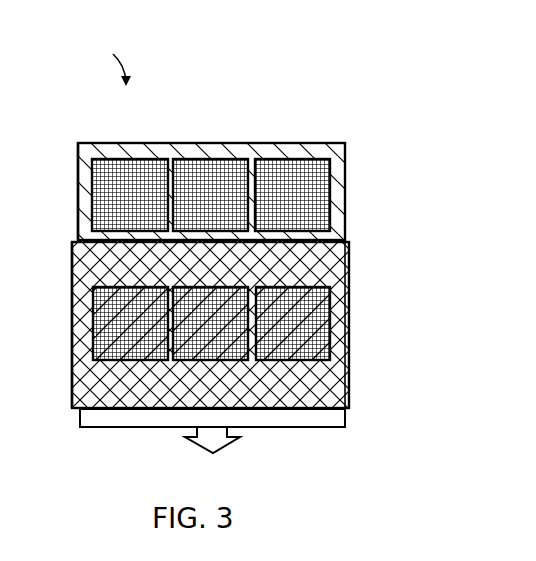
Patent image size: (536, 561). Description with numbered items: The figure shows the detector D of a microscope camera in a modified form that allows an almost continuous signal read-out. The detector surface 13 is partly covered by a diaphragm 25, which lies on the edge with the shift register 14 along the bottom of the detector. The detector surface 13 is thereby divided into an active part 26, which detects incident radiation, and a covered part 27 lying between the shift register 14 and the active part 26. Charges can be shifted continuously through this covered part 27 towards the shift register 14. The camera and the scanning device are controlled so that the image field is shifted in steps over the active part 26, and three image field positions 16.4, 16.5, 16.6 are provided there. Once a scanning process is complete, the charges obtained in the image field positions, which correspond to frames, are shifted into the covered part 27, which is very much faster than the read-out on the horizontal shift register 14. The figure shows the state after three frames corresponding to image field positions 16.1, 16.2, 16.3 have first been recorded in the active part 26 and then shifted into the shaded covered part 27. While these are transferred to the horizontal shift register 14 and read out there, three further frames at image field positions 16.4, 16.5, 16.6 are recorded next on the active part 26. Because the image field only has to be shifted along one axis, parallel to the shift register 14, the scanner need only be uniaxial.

The detector surface 13 is at (112, 143).
The active part 26 is at (76, 152).
The covered part 27 is at (74, 328).
The diaphragm 25 is at (71, 385).
The shift register 14 is at (76, 418).
The image field position 16.1 is at (118, 360).
The image field position 16.2 is at (230, 360).
The image field position 16.3 is at (330, 302).
The image field position 16.4 is at (155, 143).
The image field position 16.5 is at (240, 143).
The image field position 16.6 is at (325, 143).
The detector D is at (108, 57).